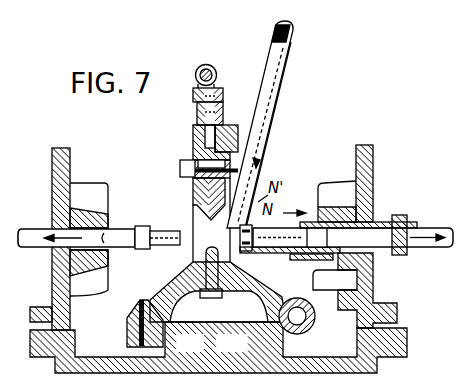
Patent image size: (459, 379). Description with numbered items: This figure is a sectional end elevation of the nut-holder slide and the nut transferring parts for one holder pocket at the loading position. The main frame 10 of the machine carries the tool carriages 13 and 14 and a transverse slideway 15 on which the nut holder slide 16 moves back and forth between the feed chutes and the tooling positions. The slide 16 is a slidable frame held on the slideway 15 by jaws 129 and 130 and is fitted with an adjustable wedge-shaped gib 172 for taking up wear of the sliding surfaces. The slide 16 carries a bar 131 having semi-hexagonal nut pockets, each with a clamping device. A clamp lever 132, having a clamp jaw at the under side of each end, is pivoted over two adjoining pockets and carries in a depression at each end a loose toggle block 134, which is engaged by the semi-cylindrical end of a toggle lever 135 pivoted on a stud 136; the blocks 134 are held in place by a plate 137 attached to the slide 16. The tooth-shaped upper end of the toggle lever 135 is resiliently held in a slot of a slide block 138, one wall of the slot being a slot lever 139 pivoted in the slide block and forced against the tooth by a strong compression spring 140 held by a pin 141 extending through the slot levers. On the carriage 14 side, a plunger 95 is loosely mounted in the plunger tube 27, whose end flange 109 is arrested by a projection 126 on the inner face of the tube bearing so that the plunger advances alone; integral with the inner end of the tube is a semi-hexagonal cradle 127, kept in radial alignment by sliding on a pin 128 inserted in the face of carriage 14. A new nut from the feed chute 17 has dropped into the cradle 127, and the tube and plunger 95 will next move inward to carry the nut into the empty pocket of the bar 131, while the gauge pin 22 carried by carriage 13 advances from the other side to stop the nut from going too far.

The main frame 10 is at (46, 356).
The tool carriage 13 is at (52, 173).
The tool carriage 14 is at (373, 160).
The transverse slideway 15 is at (203, 325).
The nut holder slide 16 is at (232, 128).
The feed chute 17 is at (281, 78).
The gauge pin 22 is at (50, 232).
The nut transferring plunger tube 27 is at (314, 226).
The plunger 95 is at (418, 248).
The end flange 109 is at (405, 220).
The projection 126 is at (373, 215).
The semi-hexagonal cradle 127 is at (241, 251).
The pin 128 is at (296, 262).
The jaw 129 is at (127, 326).
The jaw 130 is at (303, 334).
The bar 131 is at (205, 252).
The clamp lever 132 is at (194, 222).
The toggle block 134 is at (194, 193).
The toggle lever 135 is at (193, 150).
The stud 136 is at (181, 168).
The plate 137 is at (193, 129).
The slide block 138 is at (196, 104).
The slot lever 139 is at (219, 90).
The compression spring 140 is at (224, 58).
The pin 141 is at (199, 67).
The wedge-shaped gib 172 is at (314, 303).